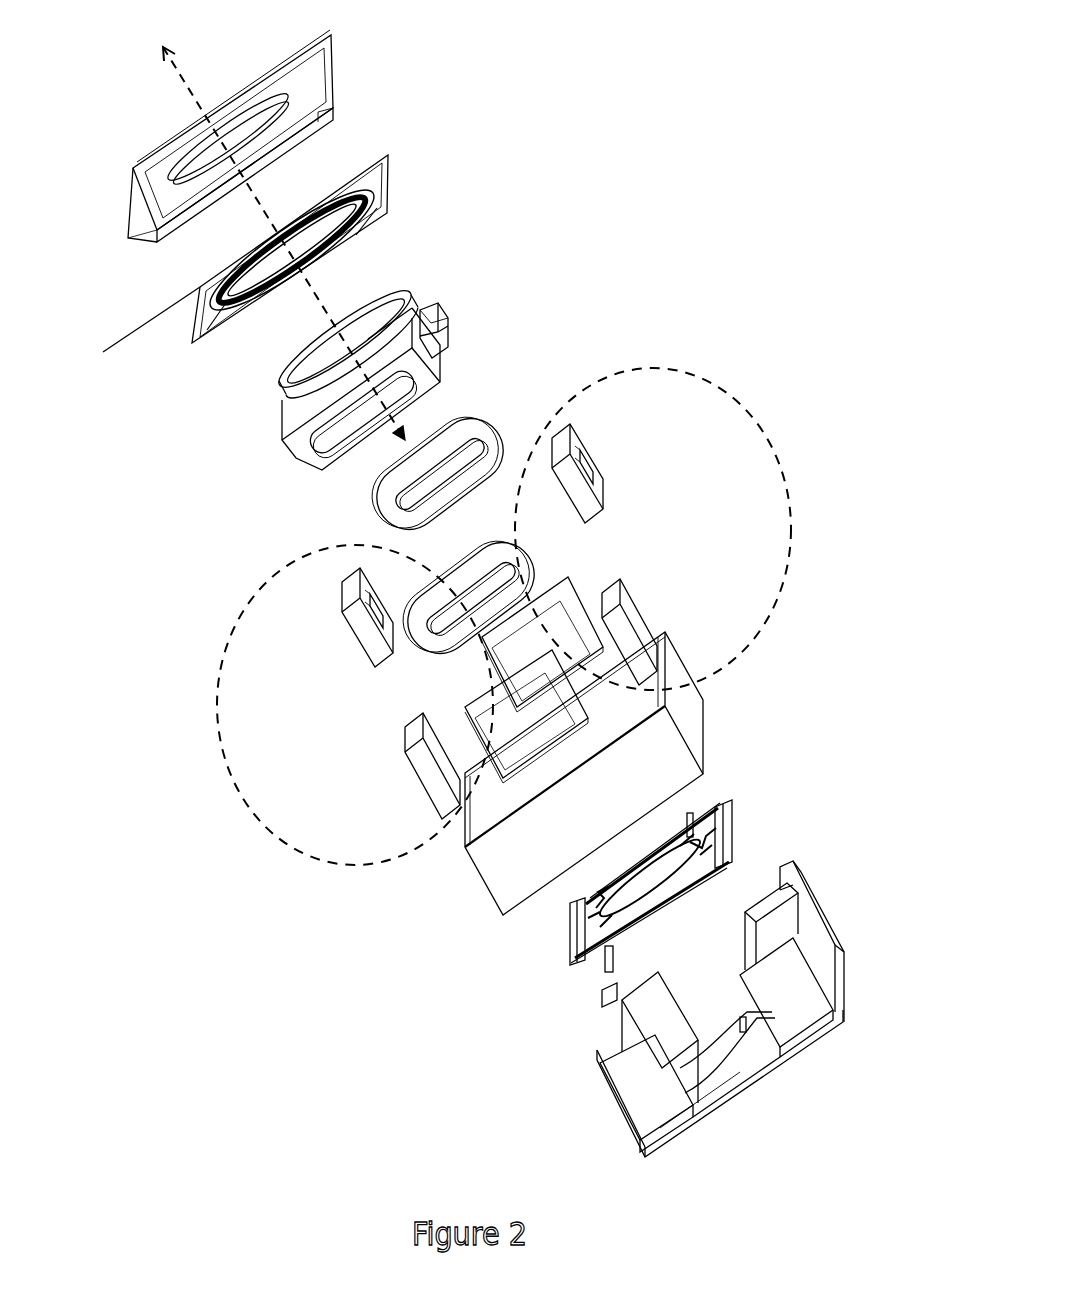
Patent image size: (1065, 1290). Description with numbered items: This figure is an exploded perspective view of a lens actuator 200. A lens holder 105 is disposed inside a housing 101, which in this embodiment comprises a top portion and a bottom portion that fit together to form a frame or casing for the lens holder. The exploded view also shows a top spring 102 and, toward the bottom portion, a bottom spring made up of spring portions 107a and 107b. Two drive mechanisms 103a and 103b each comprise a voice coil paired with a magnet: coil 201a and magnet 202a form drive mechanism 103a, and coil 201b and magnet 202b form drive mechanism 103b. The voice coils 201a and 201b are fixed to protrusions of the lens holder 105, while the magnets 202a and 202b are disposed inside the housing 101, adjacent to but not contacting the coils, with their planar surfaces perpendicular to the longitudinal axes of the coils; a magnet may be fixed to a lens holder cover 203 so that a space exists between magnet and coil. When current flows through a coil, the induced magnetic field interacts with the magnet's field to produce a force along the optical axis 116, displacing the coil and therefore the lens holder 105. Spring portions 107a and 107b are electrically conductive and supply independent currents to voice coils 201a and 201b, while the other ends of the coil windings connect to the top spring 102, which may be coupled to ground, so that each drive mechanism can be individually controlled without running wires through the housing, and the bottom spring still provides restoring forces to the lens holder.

The lens actuator 200 is at (836, 125).
The optical axis 116 is at (233, 225).
The housing 101 is at (486, 593).
The top spring 102 is at (330, 253).
The lens holder 105 is at (447, 374).
The drive mechanism 103a is at (712, 524).
The drive mechanism 103b is at (277, 705).
The voice coil 201a is at (622, 473).
The voice coil 201b is at (321, 617).
The magnet 202a is at (681, 632).
The magnet 202b is at (376, 766).
The cover 203 is at (636, 746).
The spring portion 107a is at (525, 962).
The spring portion 107b is at (532, 924).